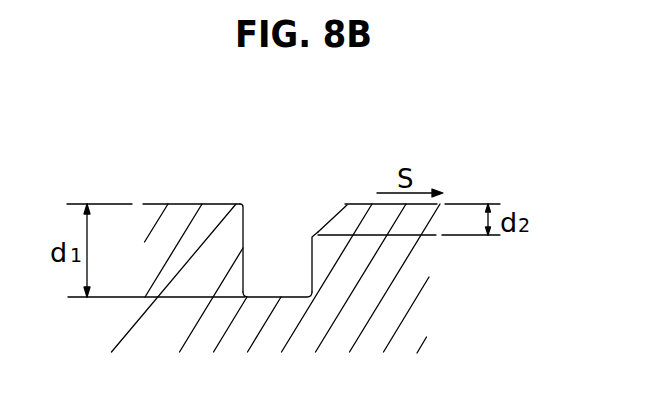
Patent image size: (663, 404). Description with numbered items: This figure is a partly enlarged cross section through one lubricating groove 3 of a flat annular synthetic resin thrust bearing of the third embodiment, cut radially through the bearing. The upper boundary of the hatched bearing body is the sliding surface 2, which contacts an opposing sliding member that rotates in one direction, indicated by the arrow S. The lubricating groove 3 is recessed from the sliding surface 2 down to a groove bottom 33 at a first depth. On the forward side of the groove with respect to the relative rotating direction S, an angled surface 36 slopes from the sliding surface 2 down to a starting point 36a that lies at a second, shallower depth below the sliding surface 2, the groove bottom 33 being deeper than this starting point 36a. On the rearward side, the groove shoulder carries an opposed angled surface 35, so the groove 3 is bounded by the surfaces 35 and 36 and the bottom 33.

The sliding surface 2 is at (177, 205).
The lubricating groove 3 is at (280, 191).
The groove bottom 33 is at (278, 300).
The opposed angled surface 35 is at (243, 205).
The angled surface 36 is at (318, 232).
The starting point 36a is at (312, 233).